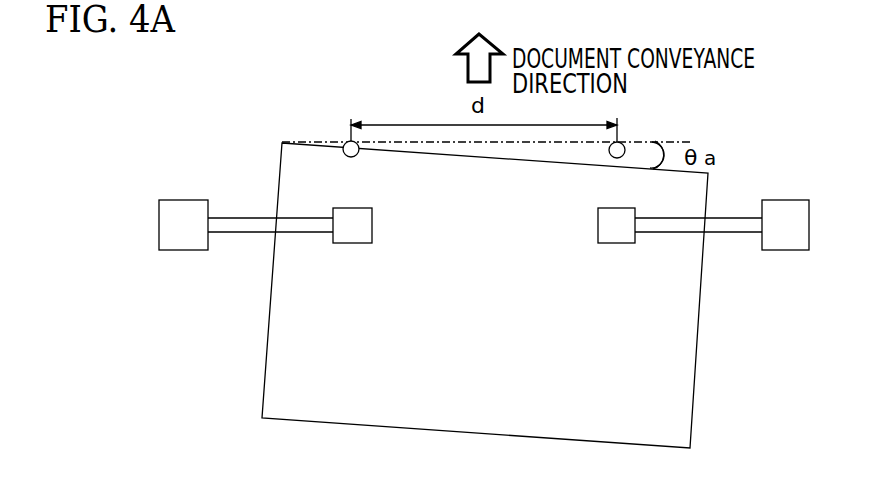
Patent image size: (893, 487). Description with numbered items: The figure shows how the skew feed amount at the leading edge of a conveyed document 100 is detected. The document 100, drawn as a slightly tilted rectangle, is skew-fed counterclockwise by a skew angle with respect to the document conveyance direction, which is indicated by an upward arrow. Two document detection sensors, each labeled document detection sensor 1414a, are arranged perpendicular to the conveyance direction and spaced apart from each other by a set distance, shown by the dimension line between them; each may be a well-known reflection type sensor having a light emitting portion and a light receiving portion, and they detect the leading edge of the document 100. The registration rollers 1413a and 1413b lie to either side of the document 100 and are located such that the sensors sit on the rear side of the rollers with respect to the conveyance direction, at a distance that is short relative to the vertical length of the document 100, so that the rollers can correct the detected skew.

The document 100 is at (264, 364).
The registration roller 1413a is at (355, 244).
The registration roller 1413b is at (615, 244).
The document detection sensor 1414a is at (355, 158).